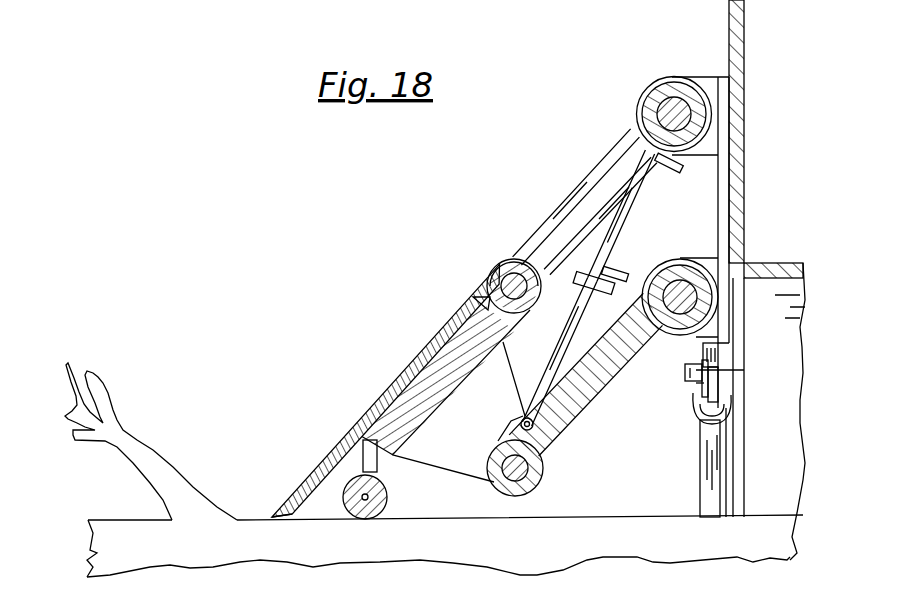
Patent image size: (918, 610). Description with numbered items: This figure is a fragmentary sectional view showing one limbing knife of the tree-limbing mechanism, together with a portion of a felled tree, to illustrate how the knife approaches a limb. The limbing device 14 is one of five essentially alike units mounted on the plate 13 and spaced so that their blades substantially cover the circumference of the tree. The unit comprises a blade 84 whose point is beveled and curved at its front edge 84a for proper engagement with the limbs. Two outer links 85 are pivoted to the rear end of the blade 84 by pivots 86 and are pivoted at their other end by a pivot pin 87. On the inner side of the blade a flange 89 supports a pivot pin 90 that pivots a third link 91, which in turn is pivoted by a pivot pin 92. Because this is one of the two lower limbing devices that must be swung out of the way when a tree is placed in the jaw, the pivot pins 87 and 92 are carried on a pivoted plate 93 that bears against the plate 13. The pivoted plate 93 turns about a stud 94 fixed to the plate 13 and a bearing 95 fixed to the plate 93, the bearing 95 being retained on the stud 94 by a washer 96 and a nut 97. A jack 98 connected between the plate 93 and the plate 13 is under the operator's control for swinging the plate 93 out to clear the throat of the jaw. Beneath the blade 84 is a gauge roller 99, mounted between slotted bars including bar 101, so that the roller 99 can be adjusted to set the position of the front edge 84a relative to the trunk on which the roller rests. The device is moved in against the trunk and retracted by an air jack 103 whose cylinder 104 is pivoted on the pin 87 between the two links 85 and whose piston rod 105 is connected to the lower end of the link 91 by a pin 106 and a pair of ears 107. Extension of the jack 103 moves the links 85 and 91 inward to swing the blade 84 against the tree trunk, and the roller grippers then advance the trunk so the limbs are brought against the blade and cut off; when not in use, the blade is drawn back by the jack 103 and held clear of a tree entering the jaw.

The plate 13 is at (745, 104).
The limbing device 14 is at (438, 294).
The blade 84 is at (412, 370).
The front edge 84a is at (270, 516).
The outer links 85 is at (594, 190).
The pivots 86 is at (513, 275).
The pivot pin 87 is at (672, 100).
The flange 89 is at (459, 412).
The pivot pin 90 is at (545, 468).
The third link 91 is at (604, 385).
The pivot pin 92 is at (682, 285).
The pivoted plate 93 is at (718, 210).
The stud 94 is at (688, 372).
The bearing 95 is at (730, 392).
The washer 96 is at (745, 370).
The nut 97 is at (696, 384).
The jack 98 is at (700, 483).
The gauge roller 99 is at (388, 495).
The bar 101 is at (380, 460).
The air jack 103 is at (618, 272).
The cylinder 104 is at (590, 273).
The piston rod 105 is at (552, 368).
The pin 106 is at (522, 419).
The ears 107 is at (503, 432).